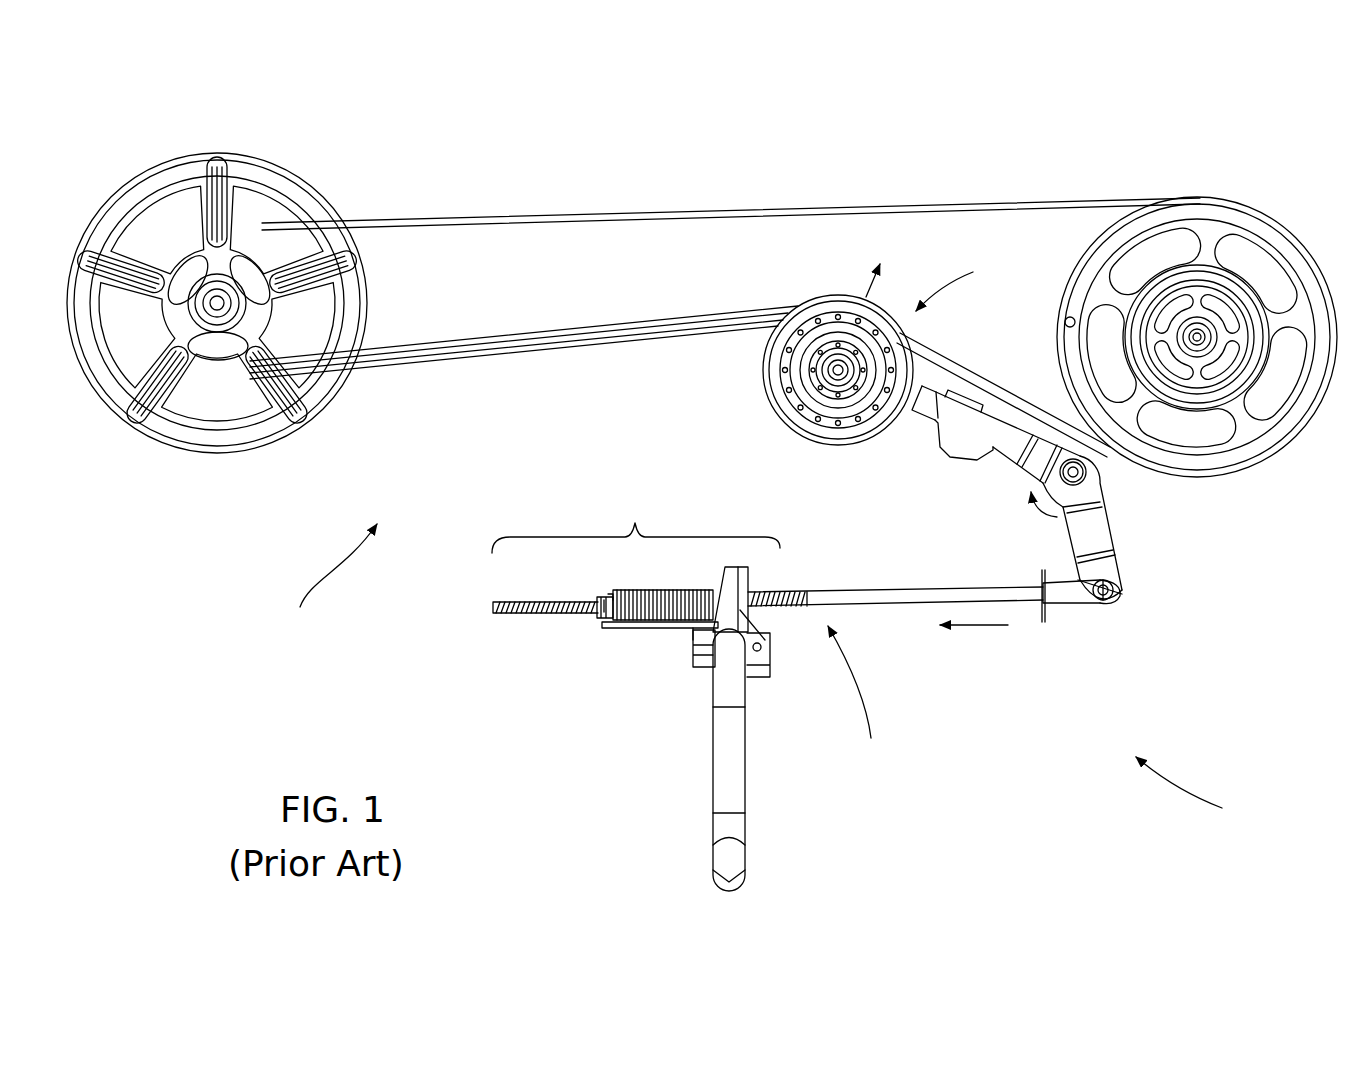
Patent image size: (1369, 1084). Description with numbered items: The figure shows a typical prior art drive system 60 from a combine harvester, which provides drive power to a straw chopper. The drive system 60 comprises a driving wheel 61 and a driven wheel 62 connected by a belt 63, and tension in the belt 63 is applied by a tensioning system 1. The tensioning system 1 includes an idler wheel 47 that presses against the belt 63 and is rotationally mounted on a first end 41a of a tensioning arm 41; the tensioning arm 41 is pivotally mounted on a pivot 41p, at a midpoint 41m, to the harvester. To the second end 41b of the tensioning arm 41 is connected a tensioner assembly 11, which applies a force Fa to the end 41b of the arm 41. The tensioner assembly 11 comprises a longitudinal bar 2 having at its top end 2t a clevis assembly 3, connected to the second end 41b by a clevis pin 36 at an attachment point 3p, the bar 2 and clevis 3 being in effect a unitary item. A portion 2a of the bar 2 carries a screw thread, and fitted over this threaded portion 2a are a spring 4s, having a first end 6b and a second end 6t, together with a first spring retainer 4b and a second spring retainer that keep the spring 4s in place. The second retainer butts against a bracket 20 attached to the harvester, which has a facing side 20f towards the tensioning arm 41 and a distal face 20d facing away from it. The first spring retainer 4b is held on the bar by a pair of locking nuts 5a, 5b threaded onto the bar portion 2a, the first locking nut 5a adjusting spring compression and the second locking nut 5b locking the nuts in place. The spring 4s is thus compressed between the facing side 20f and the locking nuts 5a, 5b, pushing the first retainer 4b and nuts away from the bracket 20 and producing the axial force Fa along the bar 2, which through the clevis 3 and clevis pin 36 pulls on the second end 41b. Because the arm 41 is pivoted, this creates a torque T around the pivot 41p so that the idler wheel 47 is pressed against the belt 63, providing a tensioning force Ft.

The tensioning system 1 is at (1187, 789).
The longitudinal bar 2 is at (898, 607).
The threaded portion of the bar 2a is at (636, 524).
The top end of the bar 2t is at (1068, 610).
The clevis assembly 3 is at (1085, 598).
The attachment point 3p is at (1113, 600).
The first spring retainer 4b is at (597, 614).
The spring 4s is at (660, 628).
The first locking nut 5a is at (610, 595).
The second locking nut 5b is at (605, 597).
The first end of the spring 6b is at (618, 624).
The second end of the spring 6t is at (690, 630).
The tensioner assembly 11 is at (856, 695).
The bracket 20 is at (770, 647).
The distal face 20d is at (735, 576).
The facing side 20f is at (747, 585).
The clevis pin 36 is at (1110, 604).
The tensioning arm 41 is at (1100, 540).
The first end of the tensioning arm 41a is at (970, 281).
The second end of the tensioning arm 41b is at (1125, 590).
The midpoint of the tensioning arm 41m is at (1047, 486).
The pivot 41p is at (1088, 485).
The idler wheel 47 is at (807, 300).
The drive system 60 is at (322, 583).
The driving wheel 61 is at (1153, 213).
The driven wheel 62 is at (295, 180).
The belt 63 is at (727, 209).
The tensioning force Ft is at (879, 264).
The axial force Fa is at (974, 642).
The torque T is at (1040, 515).